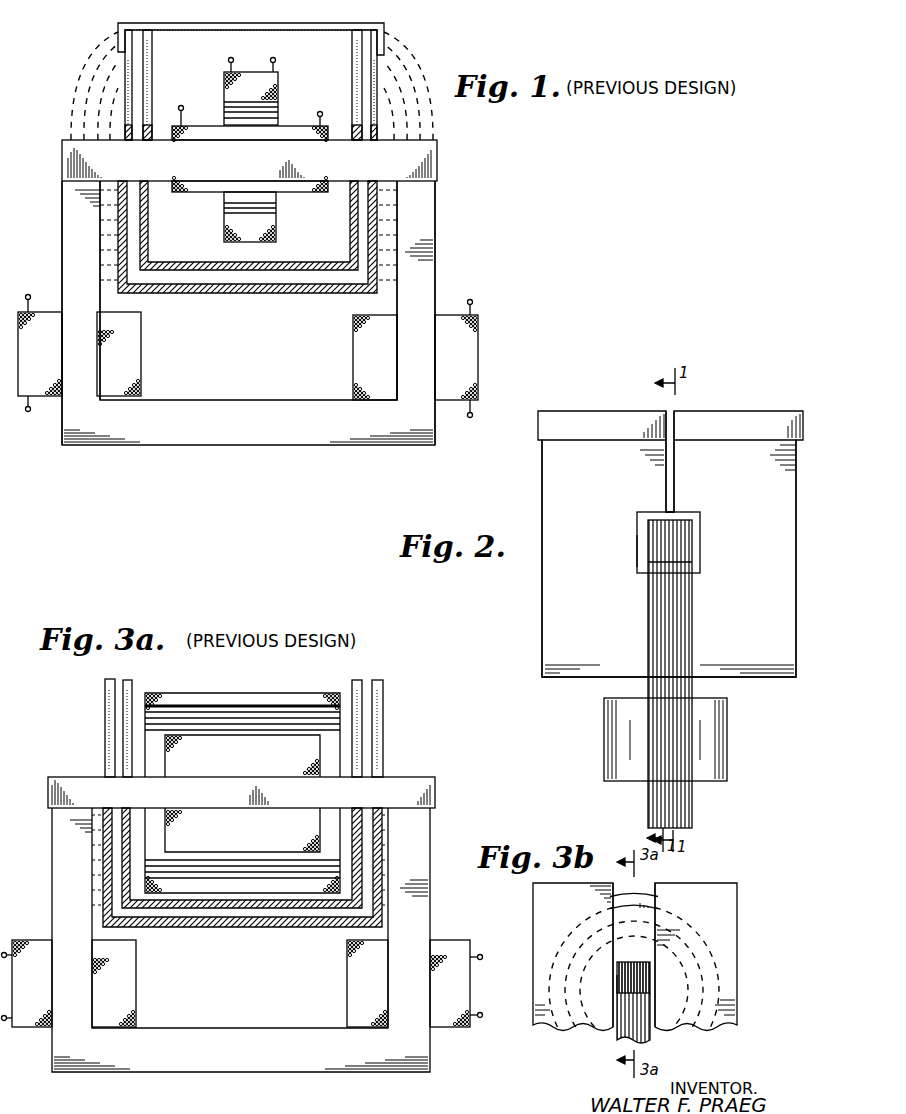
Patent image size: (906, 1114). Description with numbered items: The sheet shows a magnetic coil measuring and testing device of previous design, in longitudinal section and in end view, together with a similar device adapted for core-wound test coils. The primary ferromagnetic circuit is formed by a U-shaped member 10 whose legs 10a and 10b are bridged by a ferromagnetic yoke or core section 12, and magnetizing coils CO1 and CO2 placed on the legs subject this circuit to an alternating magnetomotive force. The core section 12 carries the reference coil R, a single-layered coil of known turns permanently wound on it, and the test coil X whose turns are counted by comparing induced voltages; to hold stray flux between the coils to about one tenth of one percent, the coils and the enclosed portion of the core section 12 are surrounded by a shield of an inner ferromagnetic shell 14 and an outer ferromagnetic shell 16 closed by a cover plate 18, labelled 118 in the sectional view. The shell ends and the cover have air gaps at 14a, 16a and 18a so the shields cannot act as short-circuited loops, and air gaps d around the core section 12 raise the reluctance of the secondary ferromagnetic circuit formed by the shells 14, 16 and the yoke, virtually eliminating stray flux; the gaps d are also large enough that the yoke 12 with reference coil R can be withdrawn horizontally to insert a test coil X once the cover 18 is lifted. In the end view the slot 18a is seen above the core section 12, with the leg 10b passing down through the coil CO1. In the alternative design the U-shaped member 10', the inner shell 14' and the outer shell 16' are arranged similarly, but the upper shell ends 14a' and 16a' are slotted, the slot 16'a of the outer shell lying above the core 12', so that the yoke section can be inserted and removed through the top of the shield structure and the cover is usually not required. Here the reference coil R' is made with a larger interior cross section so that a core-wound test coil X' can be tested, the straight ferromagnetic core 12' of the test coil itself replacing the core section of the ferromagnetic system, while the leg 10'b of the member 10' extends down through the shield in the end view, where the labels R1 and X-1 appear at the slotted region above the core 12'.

In FIG. 1, the top plate 118 is at (262, 30).
In FIG. 1, the air gap in outer shell end 16a is at (249, 85).
In FIG. 2, the air gap in outer shell end 16a is at (648, 558).
In FIG. 1, the air gap in inner shell end 14a is at (252, 85).
In FIG. 1, the ferromagnetic yoke or core section 12 is at (268, 160).
In FIG. 2, the ferromagnetic yoke or core section 12 is at (690, 542).
In FIG. 1, the U-shaped member 10 is at (273, 313).
In FIG. 1, the leg 10a is at (437, 207).
In FIG. 1, the leg 10b is at (70, 216).
In FIG. 2, the leg 10b is at (665, 636).
In FIG. 1, the outer ferromagnetic shell 16 is at (247, 248).
In FIG. 1, the inner ferromagnetic shell 14 is at (249, 225).
In FIG. 1, the reference coil R is at (250, 134).
In FIG. 1, the test coil X is at (251, 137).
In FIG. 1, the magnetizing coil CO1 is at (36, 311).
In FIG. 2, the magnetizing coil CO1 is at (715, 738).
In FIG. 3A, the magnetizing coil CO1 is at (136, 972).
In FIG. 1, the magnetizing coil CO2 is at (478, 325).
In FIG. 3A, the magnetizing coil CO2 is at (347, 977).
In FIG. 2, the cover plate 18 is at (748, 420).
In FIG. 2, the air gap in cover 18a is at (672, 410).
In FIG. 2, the air gaps d is at (637, 567).
In FIG. 3B, the air gaps d is at (617, 993).
In FIG. 3A, the slotted outer shell end 16a' is at (223, 728).
In FIG. 3A, the slotted inner shell end 14a' is at (213, 728).
In FIG. 3A, the coil core 12' is at (253, 775).
In FIG. 3B, the coil core 12' is at (654, 977).
In FIG. 3A, the frame (prior design) 10' is at (241, 954).
In FIG. 3A, the outer shell (prior design) 16' is at (242, 884).
In FIG. 3A, the inner shell (prior design) 14' is at (242, 884).
In FIG. 3A, the reference coil R' is at (242, 778).
In FIG. 3A, the core-wound test coil X' is at (288, 784).
In FIG. 3B, the slot in outer shell end 16'a is at (662, 957).
In FIG. 3B, the flux arc R1 is at (638, 898).
In FIG. 3B, the gap region X-1 is at (622, 961).
In FIG. 3B, the core bar (prior design) 10'b is at (669, 1030).